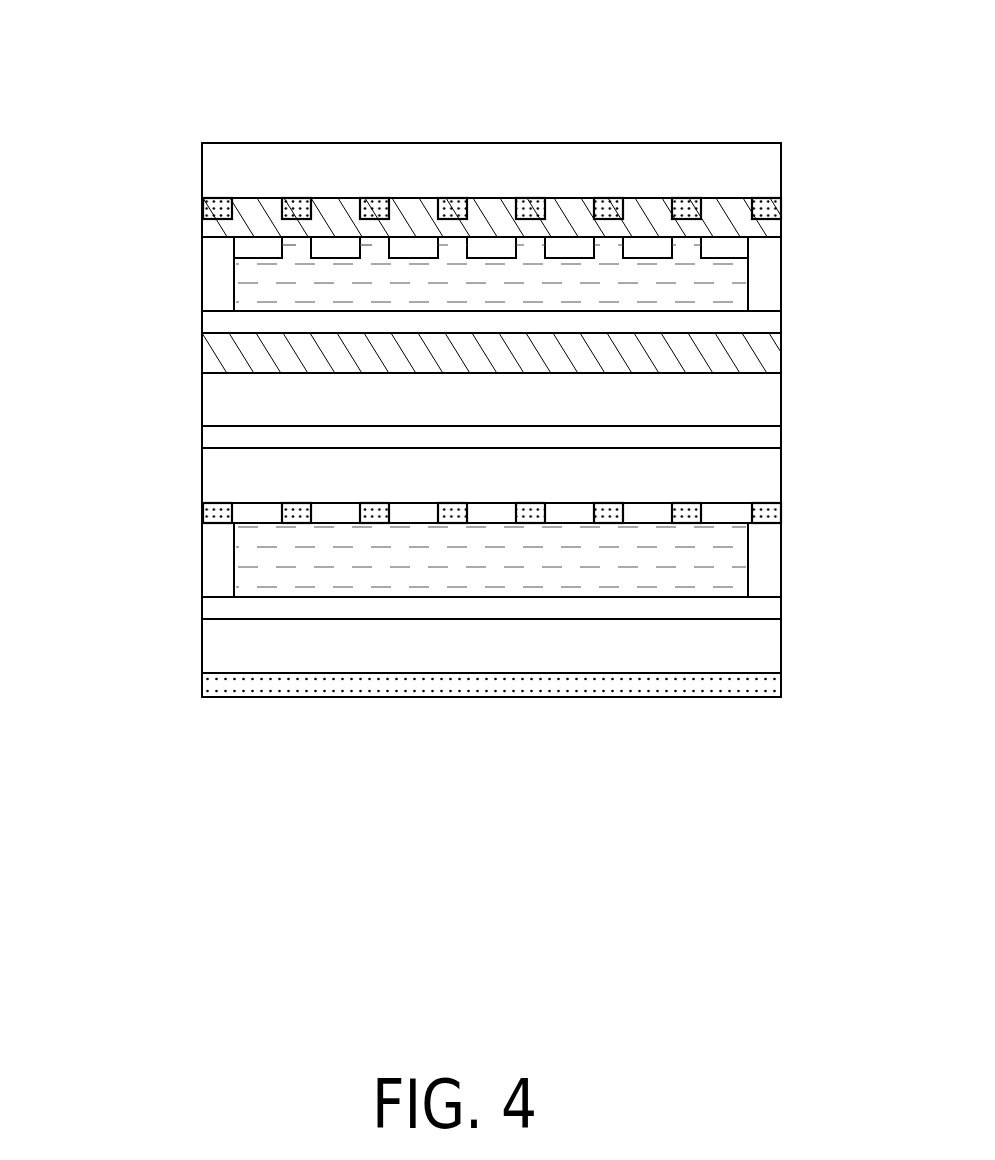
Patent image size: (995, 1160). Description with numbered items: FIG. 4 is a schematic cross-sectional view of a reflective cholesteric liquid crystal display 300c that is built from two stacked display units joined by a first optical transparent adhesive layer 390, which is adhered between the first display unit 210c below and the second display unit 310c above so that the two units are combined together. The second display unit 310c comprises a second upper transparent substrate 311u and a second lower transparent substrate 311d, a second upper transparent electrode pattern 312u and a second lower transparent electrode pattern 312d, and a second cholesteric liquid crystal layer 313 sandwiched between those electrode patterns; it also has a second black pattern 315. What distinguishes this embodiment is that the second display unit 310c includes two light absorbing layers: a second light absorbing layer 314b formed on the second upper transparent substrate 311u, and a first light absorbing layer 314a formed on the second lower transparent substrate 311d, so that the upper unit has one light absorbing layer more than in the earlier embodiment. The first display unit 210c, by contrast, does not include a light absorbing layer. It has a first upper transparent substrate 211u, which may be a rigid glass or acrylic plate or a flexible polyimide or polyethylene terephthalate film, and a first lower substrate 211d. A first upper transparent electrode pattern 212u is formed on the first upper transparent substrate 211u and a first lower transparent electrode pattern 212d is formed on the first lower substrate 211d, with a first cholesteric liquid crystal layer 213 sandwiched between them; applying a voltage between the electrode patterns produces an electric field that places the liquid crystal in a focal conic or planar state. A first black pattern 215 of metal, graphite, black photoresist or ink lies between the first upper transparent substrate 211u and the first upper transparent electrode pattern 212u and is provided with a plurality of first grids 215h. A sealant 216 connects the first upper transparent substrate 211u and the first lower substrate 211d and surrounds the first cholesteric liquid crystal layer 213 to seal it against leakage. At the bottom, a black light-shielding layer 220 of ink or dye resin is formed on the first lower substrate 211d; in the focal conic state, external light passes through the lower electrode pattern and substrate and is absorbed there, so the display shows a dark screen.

The reflective cholesteric liquid crystal display 300c is at (165, 28).
The second display unit 310c is at (137, 254).
The second upper transparent substrate 311u is at (772, 166).
The second light absorbing layer 314b is at (772, 229).
The second black pattern 315 is at (203, 209).
The second upper transparent electrode pattern 312u is at (738, 247).
The second cholesteric liquid crystal layer 313 is at (728, 292).
The second lower transparent electrode pattern 312d is at (763, 323).
The first light absorbing layer 314a is at (763, 360).
The second lower transparent substrate 311d is at (763, 395).
The first optical transparent adhesive layer 390 is at (212, 431).
The first display unit 210c is at (137, 559).
The first upper transparent substrate 211u is at (763, 475).
The first upper transparent electrode pattern 212u is at (728, 517).
The first black pattern 215 is at (203, 513).
The first grids 215h is at (334, 515).
The first cholesteric liquid crystal layer 213 is at (730, 566).
The sealant 216 is at (211, 577).
The first lower transparent electrode pattern 212d is at (763, 608).
The first lower substrate 211d is at (763, 650).
The black light-shielding layer 220 is at (203, 687).